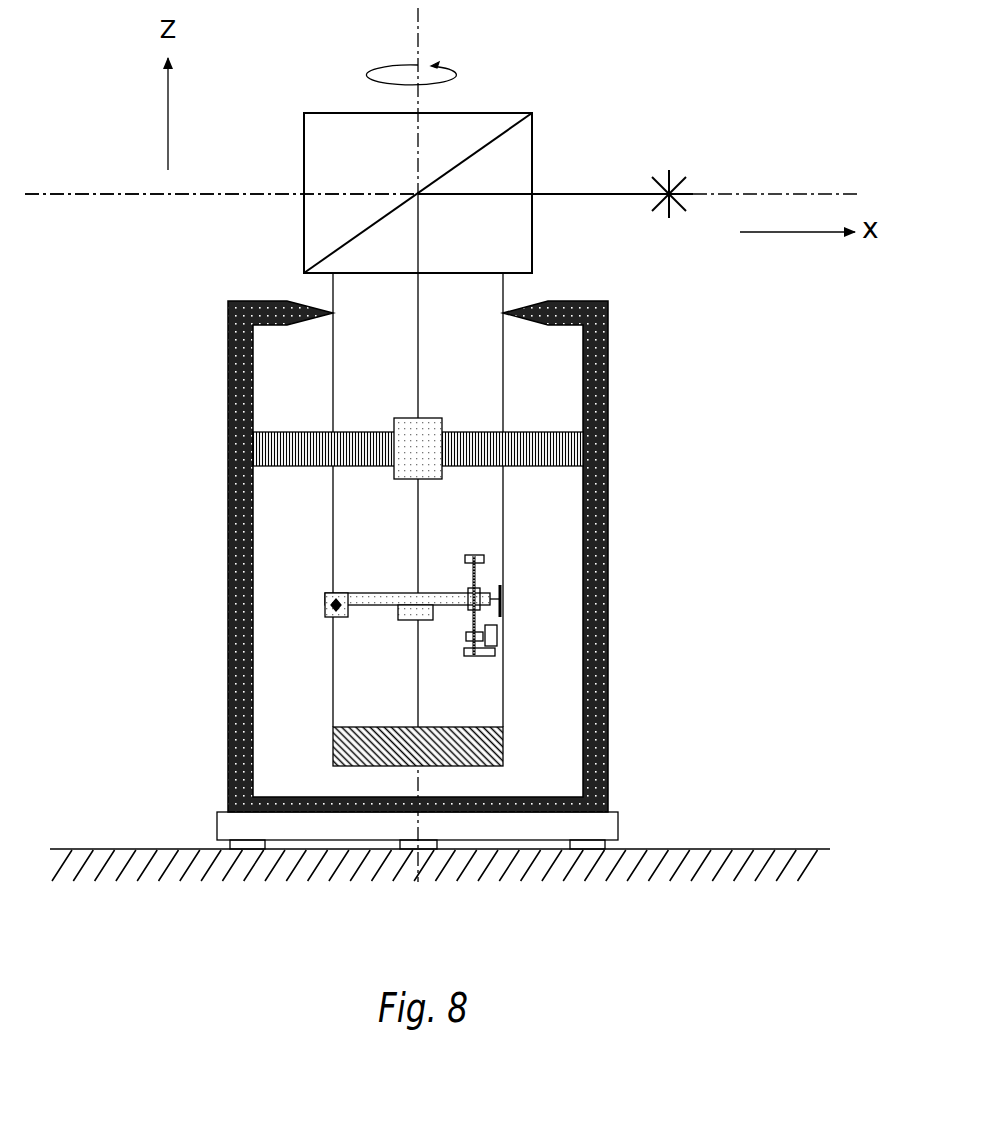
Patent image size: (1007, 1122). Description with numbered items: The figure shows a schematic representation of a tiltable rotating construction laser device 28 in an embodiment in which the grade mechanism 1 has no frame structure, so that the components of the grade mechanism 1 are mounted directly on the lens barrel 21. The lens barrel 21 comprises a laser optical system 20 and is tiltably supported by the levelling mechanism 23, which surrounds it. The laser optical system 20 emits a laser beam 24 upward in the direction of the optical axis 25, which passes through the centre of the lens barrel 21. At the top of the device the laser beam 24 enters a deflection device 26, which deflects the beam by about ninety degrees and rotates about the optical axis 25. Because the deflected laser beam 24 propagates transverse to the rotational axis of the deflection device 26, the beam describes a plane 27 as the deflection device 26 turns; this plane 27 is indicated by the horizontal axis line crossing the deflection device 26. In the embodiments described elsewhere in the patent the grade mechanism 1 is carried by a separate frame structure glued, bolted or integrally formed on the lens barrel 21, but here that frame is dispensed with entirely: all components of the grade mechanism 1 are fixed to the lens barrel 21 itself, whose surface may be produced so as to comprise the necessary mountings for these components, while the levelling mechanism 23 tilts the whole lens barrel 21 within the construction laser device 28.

The grade mechanism 1 is at (316, 580).
The laser optical system 20 is at (310, 716).
The lens barrel 21 is at (350, 500).
The levelling mechanism 23 is at (361, 556).
The laser beam 24 is at (584, 266).
The optical axis 25 is at (348, 82).
The deflection device 26 is at (510, 190).
The plane 27 is at (221, 227).
The tiltable rotating construction laser device 28 is at (503, 724).